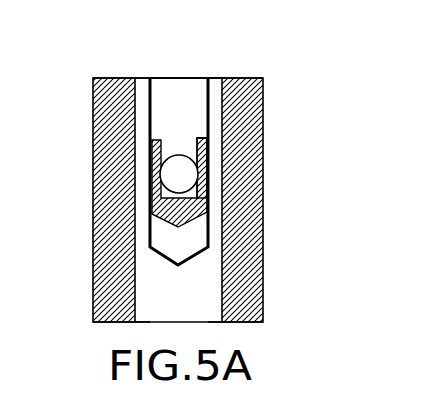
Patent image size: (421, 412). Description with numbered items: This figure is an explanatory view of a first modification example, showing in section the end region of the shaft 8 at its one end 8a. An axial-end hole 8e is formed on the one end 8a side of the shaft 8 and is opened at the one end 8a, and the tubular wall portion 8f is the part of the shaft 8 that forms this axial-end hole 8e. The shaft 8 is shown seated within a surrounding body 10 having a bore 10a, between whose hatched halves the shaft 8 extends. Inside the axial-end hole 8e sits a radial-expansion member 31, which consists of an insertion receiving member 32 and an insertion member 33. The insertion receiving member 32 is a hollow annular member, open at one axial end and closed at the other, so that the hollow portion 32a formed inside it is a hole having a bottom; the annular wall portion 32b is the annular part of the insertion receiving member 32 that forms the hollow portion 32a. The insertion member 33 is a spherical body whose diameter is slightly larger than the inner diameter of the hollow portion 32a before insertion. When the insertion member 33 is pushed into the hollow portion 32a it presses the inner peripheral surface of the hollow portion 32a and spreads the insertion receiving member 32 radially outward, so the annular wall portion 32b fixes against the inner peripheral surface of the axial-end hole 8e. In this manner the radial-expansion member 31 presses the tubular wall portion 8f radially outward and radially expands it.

The shaft 8 is at (165, 283).
The one end 8a is at (213, 78).
The axial-end hole 8e is at (203, 112).
The tubular wall portion 8f is at (142, 100).
The block body 10 is at (93, 186).
The block bore 10a is at (214, 283).
The radial-expansion member 31 is at (166, 114).
The insertion receiving member 32 is at (177, 228).
The hollow portion 32a is at (208, 146).
The annular wall portion 32b is at (200, 138).
The insertion member 33 is at (178, 173).